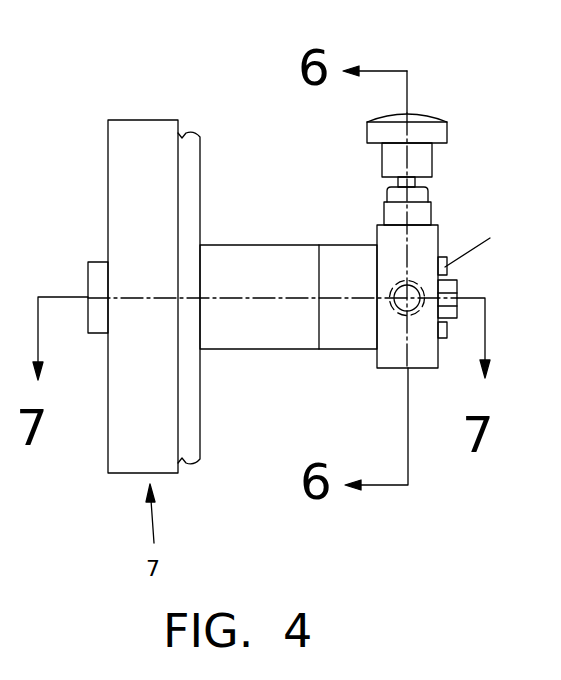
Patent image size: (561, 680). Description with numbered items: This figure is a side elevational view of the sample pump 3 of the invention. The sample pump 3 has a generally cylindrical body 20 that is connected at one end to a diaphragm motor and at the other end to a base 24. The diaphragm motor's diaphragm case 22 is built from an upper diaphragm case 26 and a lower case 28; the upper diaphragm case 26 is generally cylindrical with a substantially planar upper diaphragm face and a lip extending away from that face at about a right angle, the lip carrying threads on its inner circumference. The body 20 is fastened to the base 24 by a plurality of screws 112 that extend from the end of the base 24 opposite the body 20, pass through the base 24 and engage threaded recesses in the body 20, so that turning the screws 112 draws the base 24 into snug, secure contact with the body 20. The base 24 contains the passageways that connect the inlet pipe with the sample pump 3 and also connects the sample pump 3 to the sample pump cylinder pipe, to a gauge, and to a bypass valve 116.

The sample pump 3 is at (277, 62).
The body 20 is at (253, 262).
The diaphragm case 22 is at (133, 88).
The base 24 is at (423, 254).
The upper diaphragm case 26 is at (126, 194).
The lower case 28 is at (192, 157).
The screw 112 is at (447, 338).
The bypass valve 116 is at (422, 133).